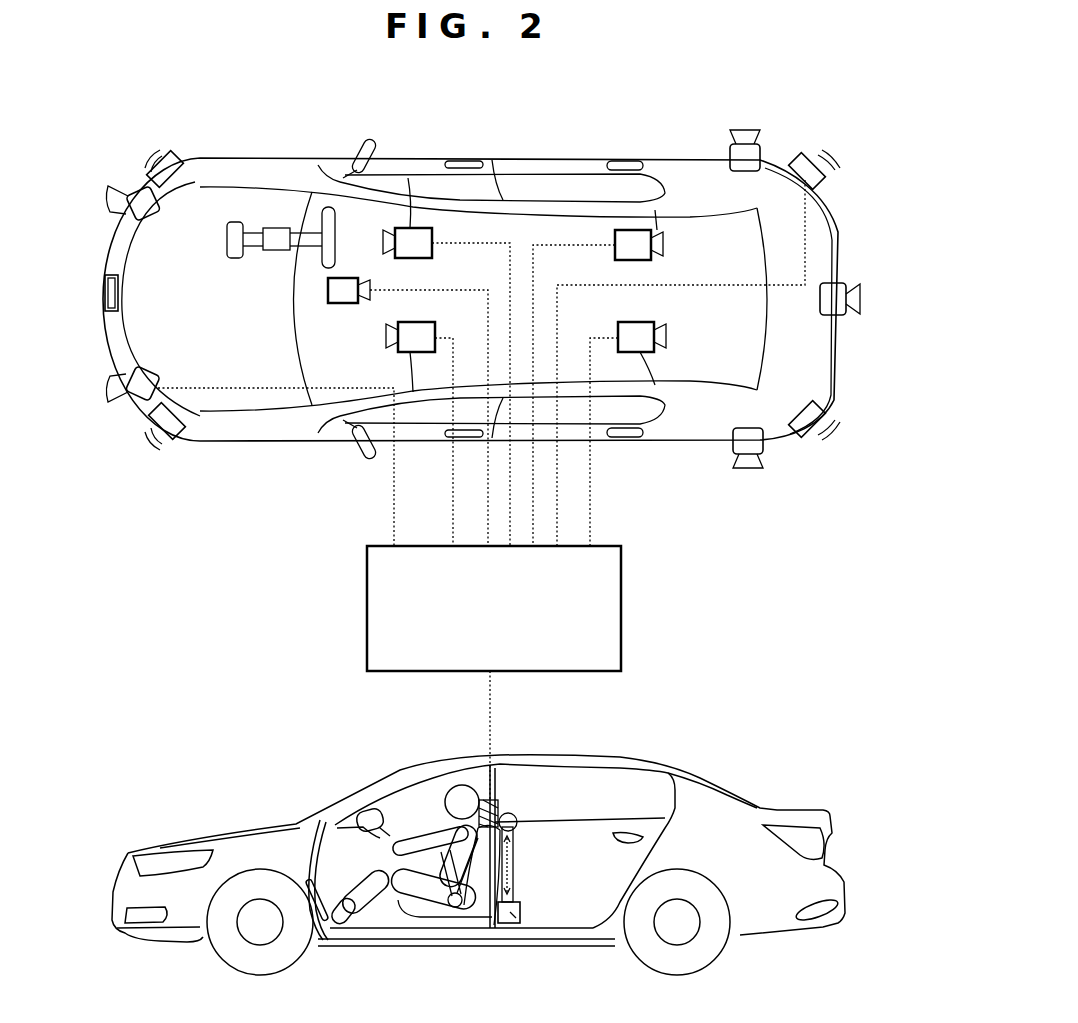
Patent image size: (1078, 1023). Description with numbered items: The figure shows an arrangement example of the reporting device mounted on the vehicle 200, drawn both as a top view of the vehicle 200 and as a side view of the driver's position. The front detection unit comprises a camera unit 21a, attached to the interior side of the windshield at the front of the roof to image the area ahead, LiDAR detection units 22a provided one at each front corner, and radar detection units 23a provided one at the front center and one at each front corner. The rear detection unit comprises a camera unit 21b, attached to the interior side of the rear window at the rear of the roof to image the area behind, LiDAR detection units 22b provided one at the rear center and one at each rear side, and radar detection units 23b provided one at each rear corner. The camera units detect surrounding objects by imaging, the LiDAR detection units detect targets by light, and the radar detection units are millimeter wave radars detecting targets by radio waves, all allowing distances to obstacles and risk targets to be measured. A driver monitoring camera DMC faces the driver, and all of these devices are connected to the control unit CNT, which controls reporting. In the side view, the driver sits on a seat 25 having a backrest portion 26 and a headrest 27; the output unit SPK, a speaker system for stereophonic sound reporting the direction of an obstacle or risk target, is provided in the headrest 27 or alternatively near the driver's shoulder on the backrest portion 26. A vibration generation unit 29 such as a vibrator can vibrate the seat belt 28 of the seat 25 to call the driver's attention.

The vehicle 200 is at (843, 216).
The camera unit 21a is at (434, 234).
The camera unit 21b is at (615, 253).
The LiDAR detection unit 22a is at (142, 231).
The LiDAR detection unit 22b is at (732, 172).
The radar detection unit 23a is at (150, 193).
The radar detection unit 23b is at (814, 165).
The driver monitoring camera DMC is at (345, 305).
The control unit CNT is at (622, 610).
The seat 25 is at (412, 900).
The backrest portion 26 is at (486, 853).
The headrest 27 is at (484, 800).
The seat belt 28 is at (440, 865).
The vibration generation unit 29 is at (520, 922).
The output unit SPK is at (502, 810).